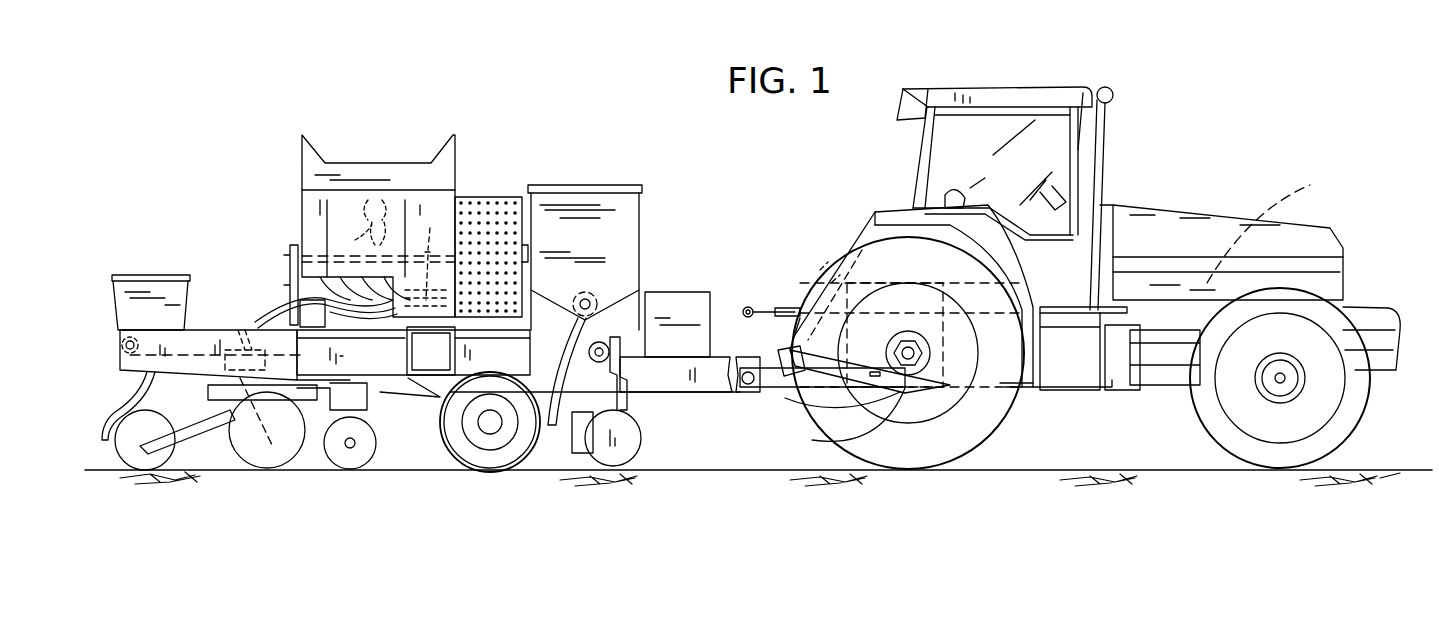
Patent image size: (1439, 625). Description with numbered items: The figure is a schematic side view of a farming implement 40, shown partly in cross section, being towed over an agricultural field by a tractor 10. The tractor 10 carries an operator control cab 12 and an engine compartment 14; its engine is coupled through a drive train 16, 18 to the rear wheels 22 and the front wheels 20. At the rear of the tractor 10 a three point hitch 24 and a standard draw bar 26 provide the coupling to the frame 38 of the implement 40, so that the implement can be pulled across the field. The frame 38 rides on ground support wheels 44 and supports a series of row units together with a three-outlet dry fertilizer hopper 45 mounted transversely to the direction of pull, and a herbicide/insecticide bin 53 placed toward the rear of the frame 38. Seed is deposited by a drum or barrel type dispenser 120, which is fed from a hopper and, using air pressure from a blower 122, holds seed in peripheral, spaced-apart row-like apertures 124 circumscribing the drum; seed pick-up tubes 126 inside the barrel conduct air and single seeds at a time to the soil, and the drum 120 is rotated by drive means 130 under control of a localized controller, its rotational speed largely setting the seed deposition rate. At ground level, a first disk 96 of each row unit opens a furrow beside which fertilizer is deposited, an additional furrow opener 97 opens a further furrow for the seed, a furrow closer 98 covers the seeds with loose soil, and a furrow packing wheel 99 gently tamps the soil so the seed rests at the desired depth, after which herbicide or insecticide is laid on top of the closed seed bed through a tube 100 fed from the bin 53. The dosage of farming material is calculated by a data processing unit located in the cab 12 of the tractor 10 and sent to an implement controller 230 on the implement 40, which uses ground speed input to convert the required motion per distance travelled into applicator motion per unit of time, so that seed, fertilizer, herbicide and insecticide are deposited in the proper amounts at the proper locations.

The tractor 10 is at (1150, 200).
The operator control cab 12 is at (1017, 93).
The engine compartment 14 is at (1310, 185).
The drive train 16 is at (945, 322).
The drive train 18 is at (1160, 388).
The front wheels 20 is at (1358, 410).
The rear wheels 22 is at (985, 420).
The three point hitch 24 is at (778, 308).
The draw bar 26 is at (830, 412).
The frame 38 is at (220, 335).
The farming implement 40 is at (346, 133).
The ground support wheels 44 is at (458, 428).
The three-outlet dry fertilizer hopper 45 is at (610, 200).
The herbicide/insecticide bin 53 is at (142, 305).
The first disk 96 is at (630, 445).
The additional furrow opener 97 is at (352, 458).
The furrow closer 98 is at (272, 462).
The furrow packing wheel 99 is at (125, 460).
The tube 100 is at (130, 392).
The drum or barrel type dispenser 120 is at (478, 195).
The blower 122 is at (358, 222).
The row-like apertures 124 is at (498, 215).
The seed pick-up tubes 126 is at (432, 253).
The drive means 130 is at (318, 315).
The implement controller 230 is at (680, 300).